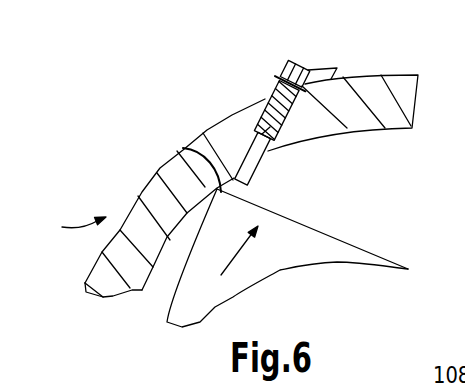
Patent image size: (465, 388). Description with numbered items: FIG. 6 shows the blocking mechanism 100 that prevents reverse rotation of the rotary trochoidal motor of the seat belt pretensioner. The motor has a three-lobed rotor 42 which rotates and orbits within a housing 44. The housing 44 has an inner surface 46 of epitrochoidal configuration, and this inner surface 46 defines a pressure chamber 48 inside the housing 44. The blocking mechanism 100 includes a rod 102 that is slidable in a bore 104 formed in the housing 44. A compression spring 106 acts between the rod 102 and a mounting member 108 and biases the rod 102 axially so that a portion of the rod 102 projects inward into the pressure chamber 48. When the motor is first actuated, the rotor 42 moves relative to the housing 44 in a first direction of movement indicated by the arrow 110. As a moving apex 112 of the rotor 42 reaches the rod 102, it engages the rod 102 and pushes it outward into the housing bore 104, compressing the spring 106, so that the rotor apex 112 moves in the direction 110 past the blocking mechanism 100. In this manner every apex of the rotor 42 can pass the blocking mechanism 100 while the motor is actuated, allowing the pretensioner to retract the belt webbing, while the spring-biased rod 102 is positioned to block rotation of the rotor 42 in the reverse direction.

The three-lobed rotor 42 is at (372, 236).
The housing 44 is at (140, 190).
The inner surface 46 is at (381, 128).
The pressure chamber 48 is at (374, 214).
The blocking mechanism 100 is at (71, 213).
The rod 102 is at (232, 117).
The bore 104 is at (251, 157).
The compression spring 106 is at (276, 76).
The mounting member 108 is at (299, 64).
The first direction of movement 110 is at (237, 247).
The rotor apex 112 is at (183, 148).